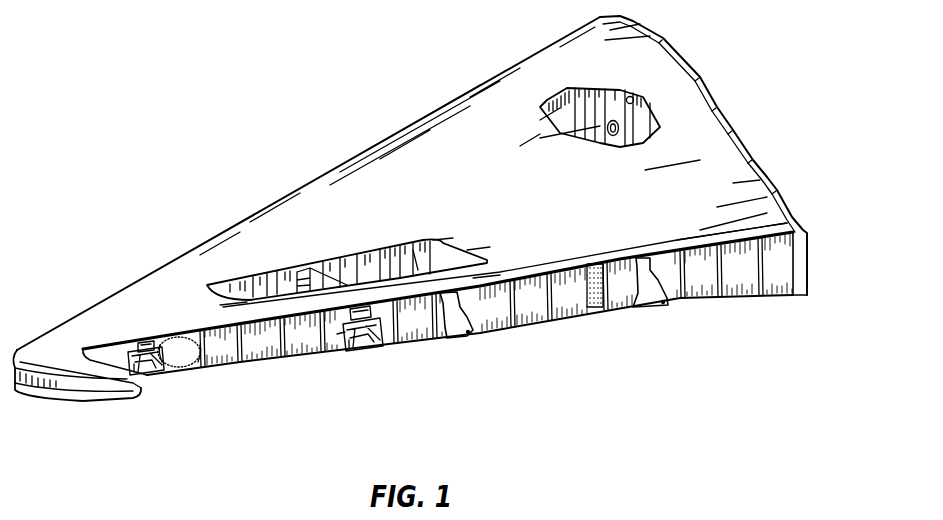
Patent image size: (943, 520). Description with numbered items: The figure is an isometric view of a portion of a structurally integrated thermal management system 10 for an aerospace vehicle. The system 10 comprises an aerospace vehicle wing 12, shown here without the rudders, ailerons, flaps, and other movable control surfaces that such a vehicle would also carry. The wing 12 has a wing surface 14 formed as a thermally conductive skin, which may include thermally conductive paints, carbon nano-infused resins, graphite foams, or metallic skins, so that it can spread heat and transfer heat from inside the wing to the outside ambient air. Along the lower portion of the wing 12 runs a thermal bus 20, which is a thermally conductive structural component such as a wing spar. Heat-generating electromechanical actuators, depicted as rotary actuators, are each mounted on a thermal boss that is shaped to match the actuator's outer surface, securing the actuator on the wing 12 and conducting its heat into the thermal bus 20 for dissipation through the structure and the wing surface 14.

The structurally integrated thermal management system 10 is at (135, 73).
The aerospace vehicle wing 12 is at (251, 249).
The wing surface 14 is at (521, 204).
The thermal bus 20 is at (527, 302).